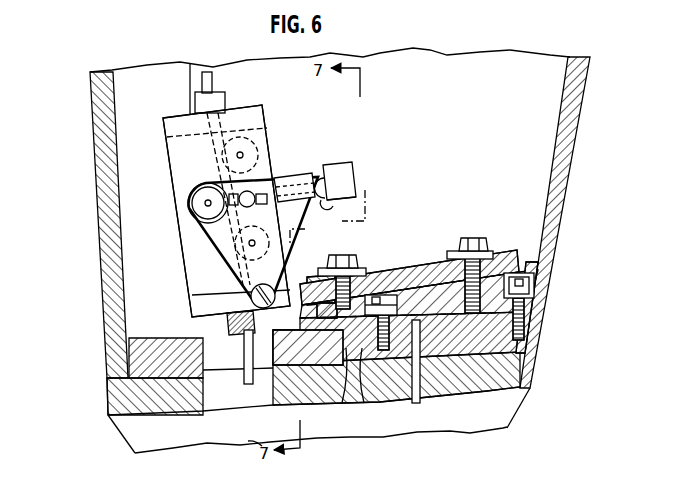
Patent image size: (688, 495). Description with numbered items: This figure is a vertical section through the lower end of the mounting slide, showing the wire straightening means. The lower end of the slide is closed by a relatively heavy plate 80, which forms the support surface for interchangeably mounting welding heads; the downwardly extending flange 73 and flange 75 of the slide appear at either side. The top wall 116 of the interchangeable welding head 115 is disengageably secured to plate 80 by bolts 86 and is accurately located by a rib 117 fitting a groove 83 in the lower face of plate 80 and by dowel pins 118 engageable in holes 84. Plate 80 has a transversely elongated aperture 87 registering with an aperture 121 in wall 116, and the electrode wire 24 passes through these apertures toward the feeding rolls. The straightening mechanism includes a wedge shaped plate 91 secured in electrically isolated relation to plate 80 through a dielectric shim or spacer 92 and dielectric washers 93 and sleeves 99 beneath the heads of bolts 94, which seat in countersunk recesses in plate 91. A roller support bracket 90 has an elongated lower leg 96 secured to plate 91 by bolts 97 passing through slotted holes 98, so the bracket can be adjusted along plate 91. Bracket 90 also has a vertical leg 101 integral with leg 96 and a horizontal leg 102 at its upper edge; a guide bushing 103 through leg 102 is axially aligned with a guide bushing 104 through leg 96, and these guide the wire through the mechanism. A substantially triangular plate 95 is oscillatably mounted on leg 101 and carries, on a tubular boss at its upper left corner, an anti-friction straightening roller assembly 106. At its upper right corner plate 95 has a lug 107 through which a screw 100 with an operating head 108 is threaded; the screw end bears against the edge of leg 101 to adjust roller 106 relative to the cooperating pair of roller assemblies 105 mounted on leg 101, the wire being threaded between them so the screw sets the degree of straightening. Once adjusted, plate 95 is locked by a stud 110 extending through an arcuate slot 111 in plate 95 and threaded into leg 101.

The electrode wire 24 is at (247, 341).
The flange 73 is at (95, 212).
The flange 75 is at (567, 190).
The plate 80 is at (522, 355).
The groove 83 is at (343, 398).
The hole 84 is at (417, 328).
The bolt 86 is at (120, 363).
The aperture 87 is at (257, 344).
The roller support bracket 90 is at (285, 143).
The wedge shaped plate 91 is at (543, 298).
The dielectric shim or spacer 92 is at (542, 320).
The dielectric washer 93 is at (530, 287).
The bolt 94 is at (535, 273).
The triangular plate 95 is at (292, 266).
The lower leg 96 is at (512, 252).
The bolt 97 is at (470, 238).
The slotted hole 98 is at (458, 253).
The sleeve 99 is at (397, 304).
The screw 100 is at (314, 178).
The vertical leg 101 is at (185, 160).
The horizontal leg 102 is at (162, 118).
The guide bushing 103 is at (218, 97).
The guide bushing 104 is at (232, 325).
The roller assembly 105 is at (266, 131).
The anti-friction straightening roller assembly 106 is at (190, 195).
The lug 107 is at (330, 212).
The operating head 108 is at (355, 175).
The stud 110 is at (278, 160).
The arcuate slot 111 is at (254, 207).
The interchangeable welding head 115 is at (150, 427).
The top wall 116 is at (122, 398).
The rib 117 is at (362, 352).
The dowel pin 118 is at (420, 398).
The aperture 121 is at (227, 395).